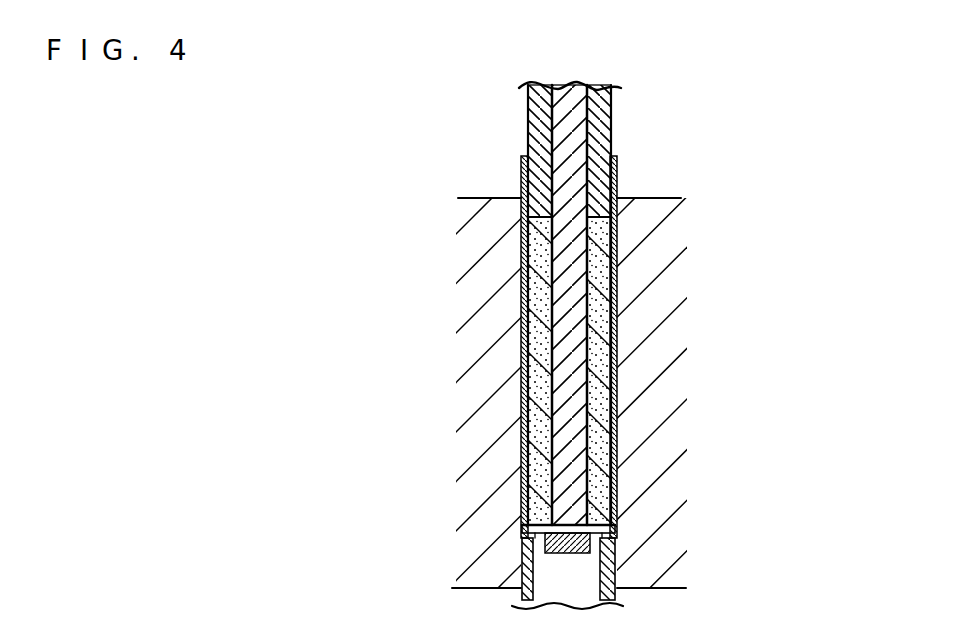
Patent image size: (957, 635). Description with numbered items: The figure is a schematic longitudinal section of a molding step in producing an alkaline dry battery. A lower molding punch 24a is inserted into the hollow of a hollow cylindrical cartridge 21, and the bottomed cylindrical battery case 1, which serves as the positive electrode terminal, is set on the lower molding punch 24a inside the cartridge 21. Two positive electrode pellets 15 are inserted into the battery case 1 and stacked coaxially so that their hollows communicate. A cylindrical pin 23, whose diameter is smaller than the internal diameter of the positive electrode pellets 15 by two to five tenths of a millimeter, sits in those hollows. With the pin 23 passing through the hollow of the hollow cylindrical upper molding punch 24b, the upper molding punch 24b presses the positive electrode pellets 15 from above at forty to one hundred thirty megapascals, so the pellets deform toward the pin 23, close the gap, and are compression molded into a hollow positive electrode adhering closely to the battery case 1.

The cylindrical battery case 1 is at (521, 178).
The positive electrode pellets 15 is at (592, 322).
The hollow cylindrical cartridge 21 is at (647, 262).
The cylindrical pin 23 is at (563, 337).
The lower molding punch 24a is at (617, 570).
The hollow cylindrical upper molding punch 24b is at (599, 127).